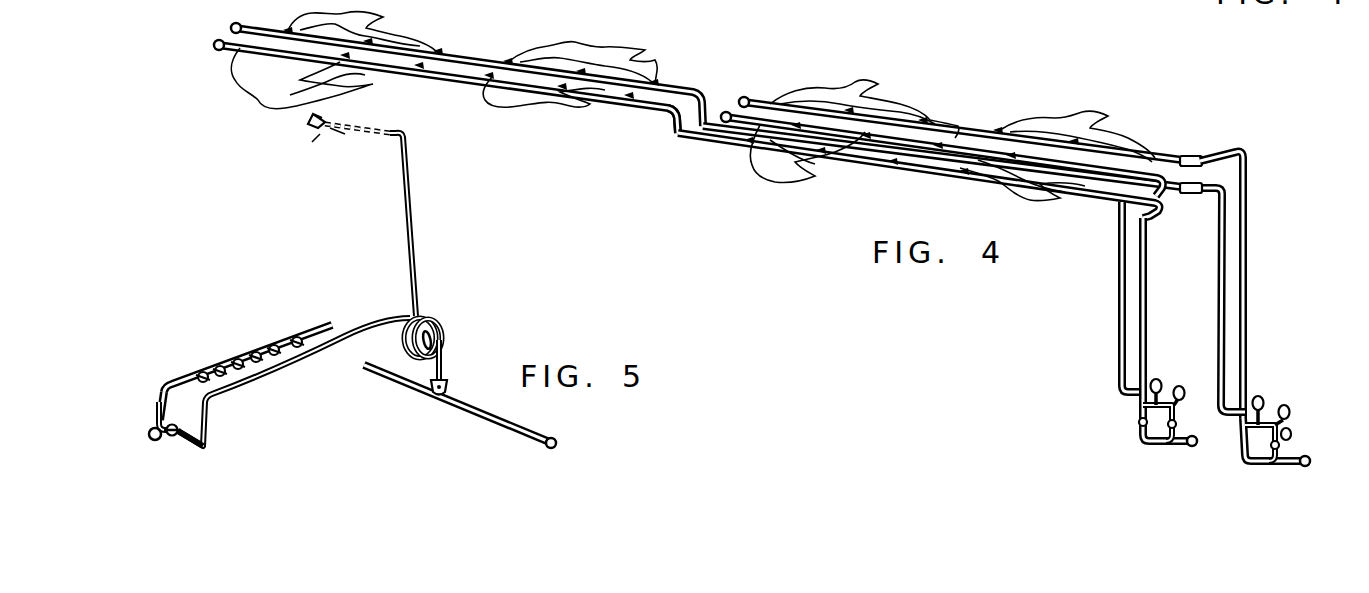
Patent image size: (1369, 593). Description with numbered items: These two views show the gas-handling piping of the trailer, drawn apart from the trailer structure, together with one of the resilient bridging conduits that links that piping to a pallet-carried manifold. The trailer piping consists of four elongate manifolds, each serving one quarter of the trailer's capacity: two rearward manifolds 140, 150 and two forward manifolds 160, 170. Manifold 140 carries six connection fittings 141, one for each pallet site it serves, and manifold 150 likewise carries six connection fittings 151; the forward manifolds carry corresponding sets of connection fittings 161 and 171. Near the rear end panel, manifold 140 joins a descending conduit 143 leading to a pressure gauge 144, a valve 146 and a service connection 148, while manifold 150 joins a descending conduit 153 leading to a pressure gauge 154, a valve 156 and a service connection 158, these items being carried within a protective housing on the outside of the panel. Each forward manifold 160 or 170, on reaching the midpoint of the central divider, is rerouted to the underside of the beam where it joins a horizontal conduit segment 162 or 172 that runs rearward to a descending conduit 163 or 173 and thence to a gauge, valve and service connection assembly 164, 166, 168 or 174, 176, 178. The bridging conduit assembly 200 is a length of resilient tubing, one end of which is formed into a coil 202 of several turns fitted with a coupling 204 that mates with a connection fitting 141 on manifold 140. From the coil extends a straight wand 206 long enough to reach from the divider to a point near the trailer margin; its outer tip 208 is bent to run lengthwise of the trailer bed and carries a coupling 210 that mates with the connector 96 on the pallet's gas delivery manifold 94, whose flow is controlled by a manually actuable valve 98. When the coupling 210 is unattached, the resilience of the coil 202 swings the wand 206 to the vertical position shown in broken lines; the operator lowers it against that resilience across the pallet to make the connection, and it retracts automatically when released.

In FIG. 4, the rearward manifold 140 is at (958, 114).
In FIG. 5, the rearward manifold 140 is at (470, 420).
In FIG. 4, the connection fittings 141 is at (868, 84).
In FIG. 5, the connection fittings 141 is at (437, 388).
In FIG. 4, the descending conduit 143 is at (1250, 232).
In FIG. 4, the pressure gauge 144 is at (1290, 406).
In FIG. 4, the valve 146 is at (1294, 428).
In FIG. 4, the service connection 148 is at (1310, 468).
In FIG. 4, the rearward manifold 150 is at (924, 170).
In FIG. 4, the connection fittings 151 is at (780, 178).
In FIG. 4, the descending conduit 153 is at (1118, 294).
In FIG. 4, the pressure gauge 154 is at (1152, 370).
In FIG. 4, the valve 156 is at (1140, 408).
In FIG. 4, the pipe cap 158 is at (1196, 447).
In FIG. 4, the forward manifold 160 is at (460, 46).
In FIG. 4, the connection fittings 161 is at (376, 14).
In FIG. 4, the horizontal conduit segment 162 is at (790, 143).
In FIG. 4, the descending conduit 163 is at (1215, 237).
In FIG. 4, the pressure gauge 164 is at (1262, 386).
In FIG. 4, the valve 166 is at (1240, 466).
In FIG. 4, the service connection 168 is at (1282, 452).
In FIG. 4, the forward manifold 170 is at (430, 87).
In FIG. 4, the connection fittings 171 is at (373, 84).
In FIG. 4, the horizontal conduit segment 172 is at (688, 138).
In FIG. 4, the descending conduit 173 is at (1149, 289).
In FIG. 4, the pressure gauge 174 is at (1188, 379).
In FIG. 4, the valve 176 is at (1140, 426).
In FIG. 4, the service connection 178 is at (1174, 452).
In FIG. 5, the gas delivery manifold 94 is at (178, 377).
In FIG. 5, the connector 96 is at (146, 412).
In FIG. 5, the manually actuable valve 98 is at (148, 436).
In FIG. 5, the bridging conduit assembly 200 is at (448, 300).
In FIG. 5, the coil 202 is at (440, 320).
In FIG. 5, the coupling 204 is at (445, 378).
In FIG. 5, the wand 206 is at (414, 227).
In FIG. 5, the outer tip 208 is at (324, 154).
In FIG. 5, the coupling 210 is at (310, 124).